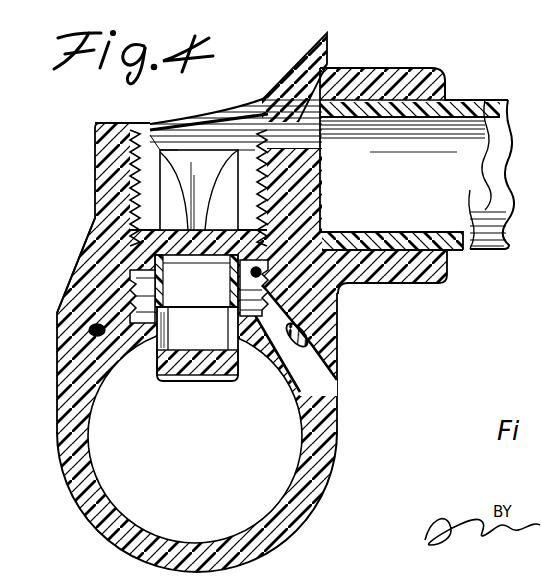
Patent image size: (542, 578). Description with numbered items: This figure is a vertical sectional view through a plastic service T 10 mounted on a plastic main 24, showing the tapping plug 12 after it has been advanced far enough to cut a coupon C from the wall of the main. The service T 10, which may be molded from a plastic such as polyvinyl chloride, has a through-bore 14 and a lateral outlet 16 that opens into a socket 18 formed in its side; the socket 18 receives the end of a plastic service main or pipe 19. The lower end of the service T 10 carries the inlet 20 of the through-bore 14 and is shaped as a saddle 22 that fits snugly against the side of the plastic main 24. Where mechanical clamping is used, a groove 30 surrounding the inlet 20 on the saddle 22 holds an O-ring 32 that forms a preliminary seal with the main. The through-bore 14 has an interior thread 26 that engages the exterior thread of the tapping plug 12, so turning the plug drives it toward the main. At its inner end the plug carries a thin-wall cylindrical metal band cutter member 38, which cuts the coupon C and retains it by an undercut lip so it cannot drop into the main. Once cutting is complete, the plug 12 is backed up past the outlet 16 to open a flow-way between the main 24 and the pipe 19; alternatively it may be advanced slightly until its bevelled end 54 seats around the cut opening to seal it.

The plastic service T 10 is at (350, 60).
The tapping plug 12 is at (283, 182).
The through-bore 14 is at (150, 120).
The lateral outlet 16 is at (289, 123).
The socket 18 is at (390, 99).
The plastic service main or pipe 19 is at (467, 100).
The inlet 20 is at (263, 307).
The saddle 22 is at (337, 350).
The plastic main 24 is at (332, 452).
The interior thread 26 is at (122, 192).
The groove 30 is at (300, 352).
The O-ring 32 is at (125, 358).
The cylindrical metal band cutter member 38 is at (240, 360).
The bevelled end 54 is at (90, 284).
The coupon C is at (200, 374).